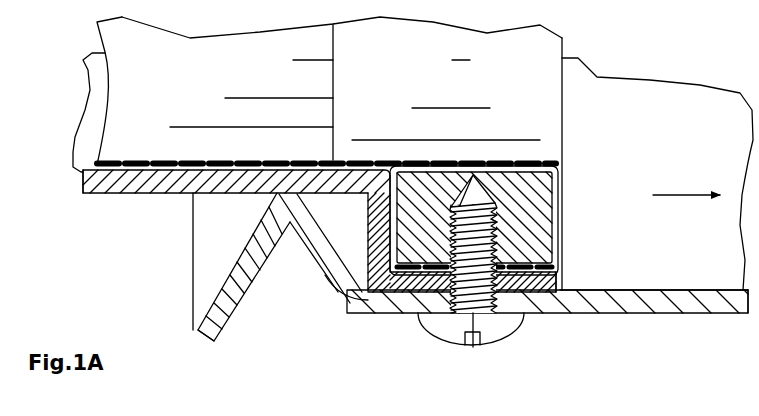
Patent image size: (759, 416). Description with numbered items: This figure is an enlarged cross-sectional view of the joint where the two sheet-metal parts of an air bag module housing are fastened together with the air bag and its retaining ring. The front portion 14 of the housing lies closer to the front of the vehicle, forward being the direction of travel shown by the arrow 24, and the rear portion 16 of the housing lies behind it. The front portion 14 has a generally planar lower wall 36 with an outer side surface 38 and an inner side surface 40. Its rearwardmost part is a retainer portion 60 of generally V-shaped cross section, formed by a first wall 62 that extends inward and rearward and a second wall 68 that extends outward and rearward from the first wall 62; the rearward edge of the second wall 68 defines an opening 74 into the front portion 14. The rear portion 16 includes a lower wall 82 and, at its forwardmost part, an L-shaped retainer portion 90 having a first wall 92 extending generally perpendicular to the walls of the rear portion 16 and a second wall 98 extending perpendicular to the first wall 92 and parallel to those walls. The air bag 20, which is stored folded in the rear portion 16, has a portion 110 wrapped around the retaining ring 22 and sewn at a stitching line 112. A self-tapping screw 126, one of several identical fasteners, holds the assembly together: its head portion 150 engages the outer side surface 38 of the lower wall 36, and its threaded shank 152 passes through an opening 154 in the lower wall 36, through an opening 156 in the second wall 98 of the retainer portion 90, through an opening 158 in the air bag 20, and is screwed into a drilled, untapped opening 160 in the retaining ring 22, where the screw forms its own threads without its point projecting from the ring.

The front portion 14 is at (712, 288).
The rear portion 16 is at (94, 198).
The air bag 20 is at (192, 158).
The air bag retaining ring 22 is at (525, 178).
The arrow 24 is at (688, 194).
The lower wall 36 is at (713, 313).
The outer side surface 38 is at (633, 313).
The inner side surface 40 is at (660, 290).
The retainer portion 60 is at (195, 336).
The first wall 62 is at (308, 256).
The second wall 68 is at (235, 312).
The opening 74 is at (188, 250).
The lower wall 82 is at (145, 195).
The retainer portion 90 is at (365, 240).
The first wall 92 is at (348, 282).
The second wall 98 is at (562, 275).
The portion of the air bag 110 is at (423, 162).
The stitching line 112 is at (352, 158).
The screw 126 is at (434, 340).
The head portion 150 is at (507, 318).
The threaded shank 152 is at (527, 172).
The opening 154 is at (497, 318).
The opening 156 is at (483, 313).
The opening 158 is at (477, 333).
The opening 160 is at (497, 222).